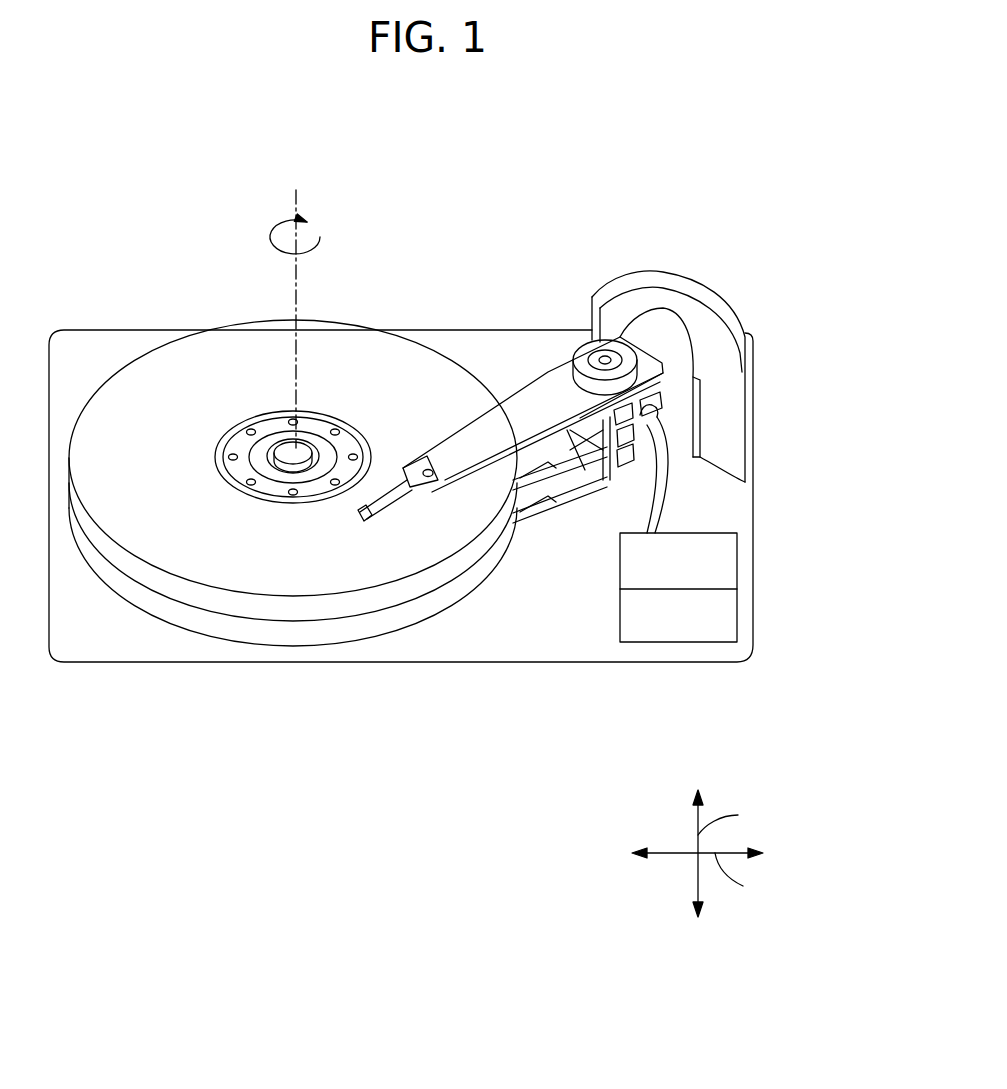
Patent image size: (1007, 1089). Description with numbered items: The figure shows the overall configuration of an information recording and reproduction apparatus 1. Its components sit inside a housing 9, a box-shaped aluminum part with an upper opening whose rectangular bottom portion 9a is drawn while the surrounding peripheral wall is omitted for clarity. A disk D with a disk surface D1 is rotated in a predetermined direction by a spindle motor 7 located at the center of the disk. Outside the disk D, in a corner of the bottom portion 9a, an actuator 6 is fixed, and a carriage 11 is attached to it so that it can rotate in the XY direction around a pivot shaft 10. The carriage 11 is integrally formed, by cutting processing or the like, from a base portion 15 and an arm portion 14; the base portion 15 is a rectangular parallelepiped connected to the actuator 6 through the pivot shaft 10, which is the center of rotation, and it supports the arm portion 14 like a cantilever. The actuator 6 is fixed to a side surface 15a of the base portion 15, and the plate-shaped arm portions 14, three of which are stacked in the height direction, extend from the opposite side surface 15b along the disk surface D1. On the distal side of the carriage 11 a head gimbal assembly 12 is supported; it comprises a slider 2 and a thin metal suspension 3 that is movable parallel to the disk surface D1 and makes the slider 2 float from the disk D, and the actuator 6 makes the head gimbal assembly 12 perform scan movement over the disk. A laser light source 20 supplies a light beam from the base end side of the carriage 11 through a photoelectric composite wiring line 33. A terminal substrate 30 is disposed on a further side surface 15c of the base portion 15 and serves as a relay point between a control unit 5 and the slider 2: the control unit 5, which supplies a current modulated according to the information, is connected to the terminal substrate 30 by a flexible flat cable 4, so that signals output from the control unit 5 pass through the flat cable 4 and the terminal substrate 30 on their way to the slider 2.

The information recording and reproduction apparatus 1 is at (133, 243).
The slider 2 is at (362, 518).
The suspension 3 is at (398, 497).
The flexible flat cable 4 is at (665, 465).
The control unit 5 is at (688, 615).
The actuator 6 is at (692, 367).
The spindle motor 7 is at (288, 447).
The housing 9 is at (484, 640).
The bottom portion 9a is at (401, 553).
The pivot shaft 10 is at (607, 347).
The carriage 11 is at (523, 415).
The head gimbal assembly 12 is at (388, 642).
The arm portion 14 is at (533, 384).
The base portion 15 is at (675, 349).
The side surface 15a is at (660, 348).
The side surface 15b is at (587, 423).
The side surface 15c is at (657, 410).
The laser light source 20 is at (643, 413).
The terminal substrate 30 is at (721, 480).
The photoelectric composite wiring line 33 is at (567, 430).
The disk D is at (293, 554).
The disk surface D1 is at (192, 552).